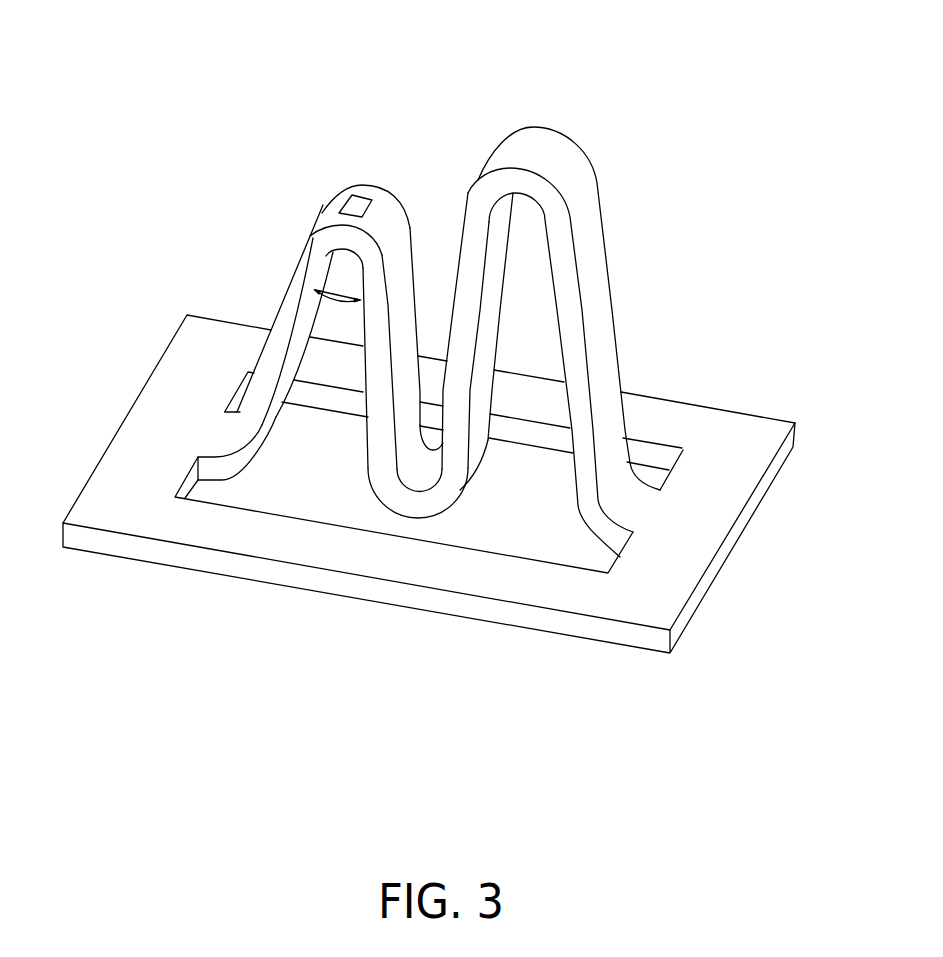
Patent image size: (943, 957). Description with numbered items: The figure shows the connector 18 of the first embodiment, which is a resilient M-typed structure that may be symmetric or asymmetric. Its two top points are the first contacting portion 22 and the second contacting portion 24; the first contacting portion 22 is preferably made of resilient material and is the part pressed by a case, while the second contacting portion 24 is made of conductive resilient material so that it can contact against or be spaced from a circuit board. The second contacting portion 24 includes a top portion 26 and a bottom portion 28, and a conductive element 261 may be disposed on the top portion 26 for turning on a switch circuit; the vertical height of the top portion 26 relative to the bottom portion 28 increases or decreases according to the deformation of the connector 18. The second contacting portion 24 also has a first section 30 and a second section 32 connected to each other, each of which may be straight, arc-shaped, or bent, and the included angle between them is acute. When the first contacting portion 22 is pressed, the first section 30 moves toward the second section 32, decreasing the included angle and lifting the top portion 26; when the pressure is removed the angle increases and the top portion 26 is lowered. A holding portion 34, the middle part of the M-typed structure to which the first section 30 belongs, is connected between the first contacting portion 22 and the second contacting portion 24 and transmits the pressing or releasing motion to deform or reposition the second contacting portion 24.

The connector 18 is at (711, 93).
The first contacting portion 22 is at (541, 147).
The second contacting portion 24 is at (102, 232).
The top portion 26 is at (321, 214).
The conductive element 261 is at (358, 202).
The bottom portion 28 is at (258, 447).
The first section 30 is at (378, 368).
The second section 32 is at (280, 348).
The holding portion 34 is at (435, 505).